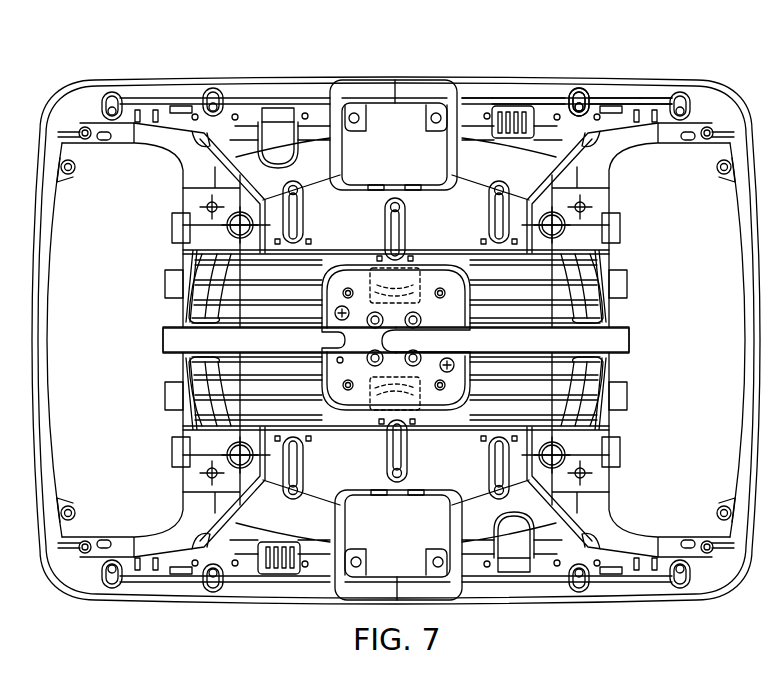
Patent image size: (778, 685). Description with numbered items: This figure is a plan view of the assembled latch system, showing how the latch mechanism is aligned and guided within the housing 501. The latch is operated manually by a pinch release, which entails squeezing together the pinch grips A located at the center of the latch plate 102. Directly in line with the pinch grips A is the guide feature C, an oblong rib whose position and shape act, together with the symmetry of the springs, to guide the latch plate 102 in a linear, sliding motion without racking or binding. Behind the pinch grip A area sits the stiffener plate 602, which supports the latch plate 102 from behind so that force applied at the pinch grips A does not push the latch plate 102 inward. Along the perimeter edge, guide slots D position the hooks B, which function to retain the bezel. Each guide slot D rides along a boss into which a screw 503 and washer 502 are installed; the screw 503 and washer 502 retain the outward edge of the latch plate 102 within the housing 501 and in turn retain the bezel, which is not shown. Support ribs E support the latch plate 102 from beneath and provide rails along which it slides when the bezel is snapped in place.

The housing 501 is at (283, 75).
The latch plate 102 is at (328, 205).
The guide feature C is at (408, 218).
The guide slot D is at (484, 86).
The hook B is at (516, 88).
The screw 503 is at (576, 96).
The washer 502 is at (590, 96).
The support rib E is at (656, 104).
The pinch grip A is at (388, 283).
The stiffener plate 602 is at (430, 275).